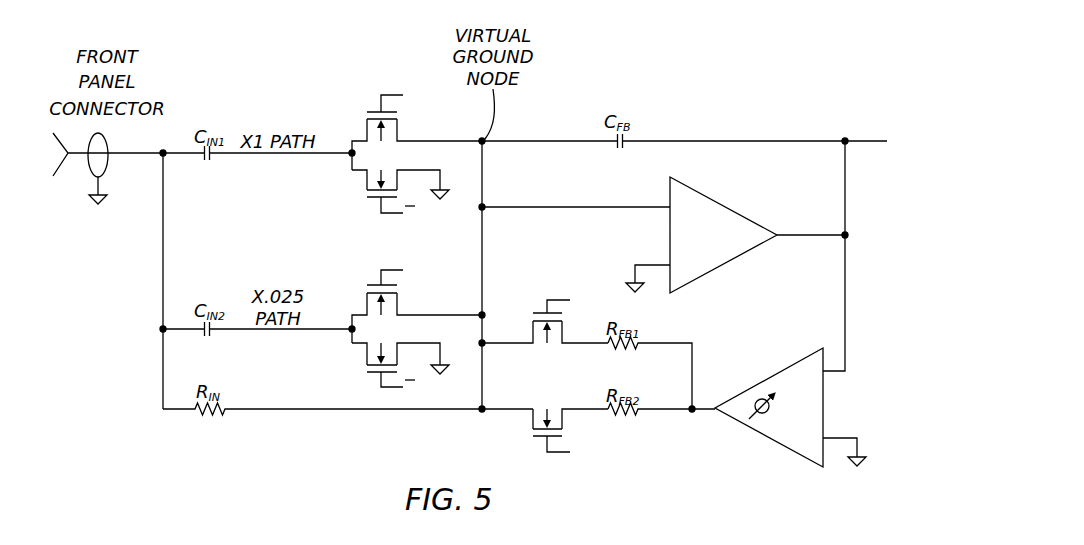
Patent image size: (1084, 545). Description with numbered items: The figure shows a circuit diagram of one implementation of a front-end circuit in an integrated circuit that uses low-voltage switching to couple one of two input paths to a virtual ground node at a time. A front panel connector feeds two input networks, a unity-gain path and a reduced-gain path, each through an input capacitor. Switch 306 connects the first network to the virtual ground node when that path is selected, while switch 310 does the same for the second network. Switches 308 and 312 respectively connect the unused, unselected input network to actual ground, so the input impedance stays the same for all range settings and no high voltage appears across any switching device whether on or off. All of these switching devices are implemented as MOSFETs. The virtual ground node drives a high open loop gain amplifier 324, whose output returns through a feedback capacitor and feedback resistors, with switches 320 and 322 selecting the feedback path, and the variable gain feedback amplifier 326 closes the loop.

The switch 306 is at (377, 105).
The switch 308 is at (376, 205).
The switch 310 is at (377, 278).
The switch 312 is at (376, 379).
The switch 320 is at (544, 307).
The switch 322 is at (544, 444).
The high open loop gain amplifier A1 324 is at (740, 256).
The variable gain feedback amplifier 326 is at (790, 364).